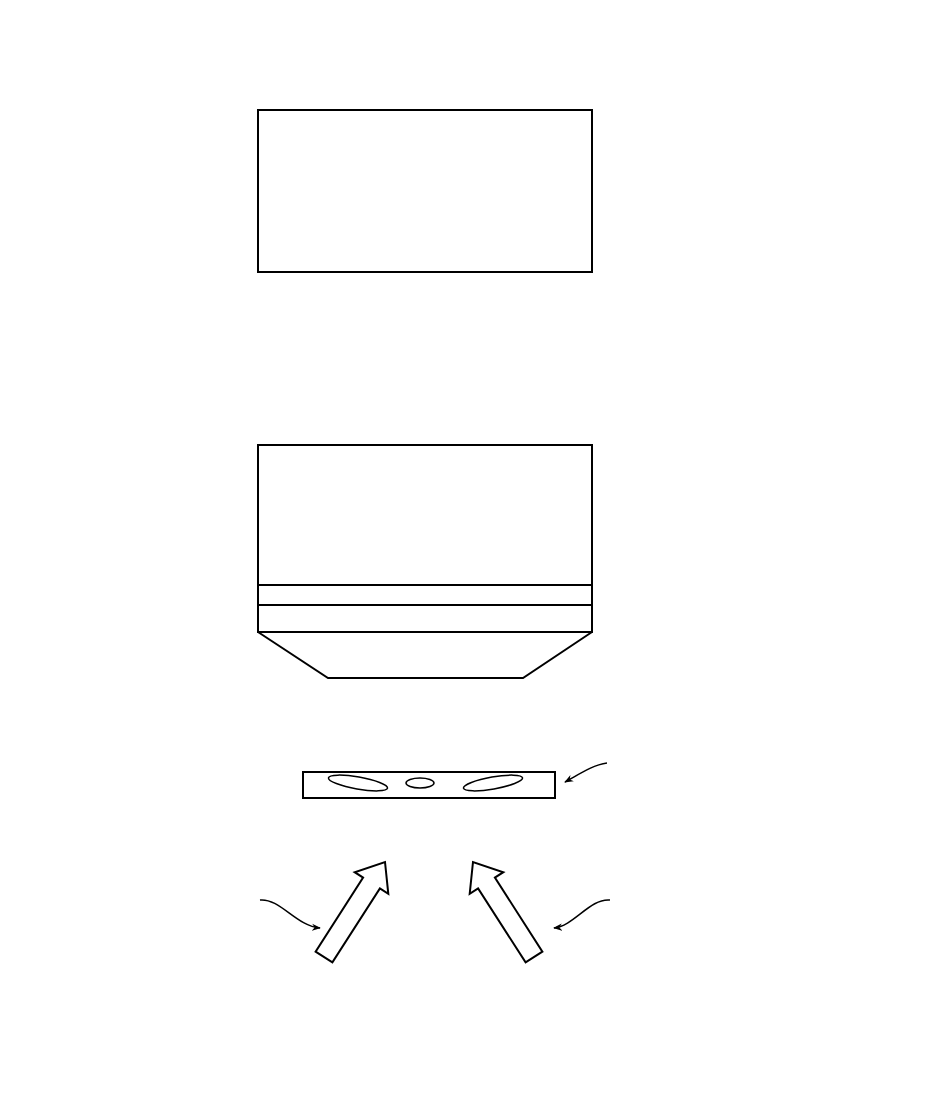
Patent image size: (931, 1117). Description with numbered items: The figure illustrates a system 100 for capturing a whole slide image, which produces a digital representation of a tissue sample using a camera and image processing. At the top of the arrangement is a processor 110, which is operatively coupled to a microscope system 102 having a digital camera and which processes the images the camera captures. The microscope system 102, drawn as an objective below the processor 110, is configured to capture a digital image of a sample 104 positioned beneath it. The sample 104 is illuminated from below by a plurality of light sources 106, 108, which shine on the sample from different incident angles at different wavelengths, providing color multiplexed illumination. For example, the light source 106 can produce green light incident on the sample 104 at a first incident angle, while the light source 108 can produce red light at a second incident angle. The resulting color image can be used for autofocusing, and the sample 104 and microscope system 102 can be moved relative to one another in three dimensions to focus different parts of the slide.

The system 100 is at (133, 35).
The microscope system 102 is at (579, 610).
The sample 104 is at (333, 765).
The light source 106 is at (362, 854).
The light source 108 is at (497, 857).
The processor 110 is at (424, 109).